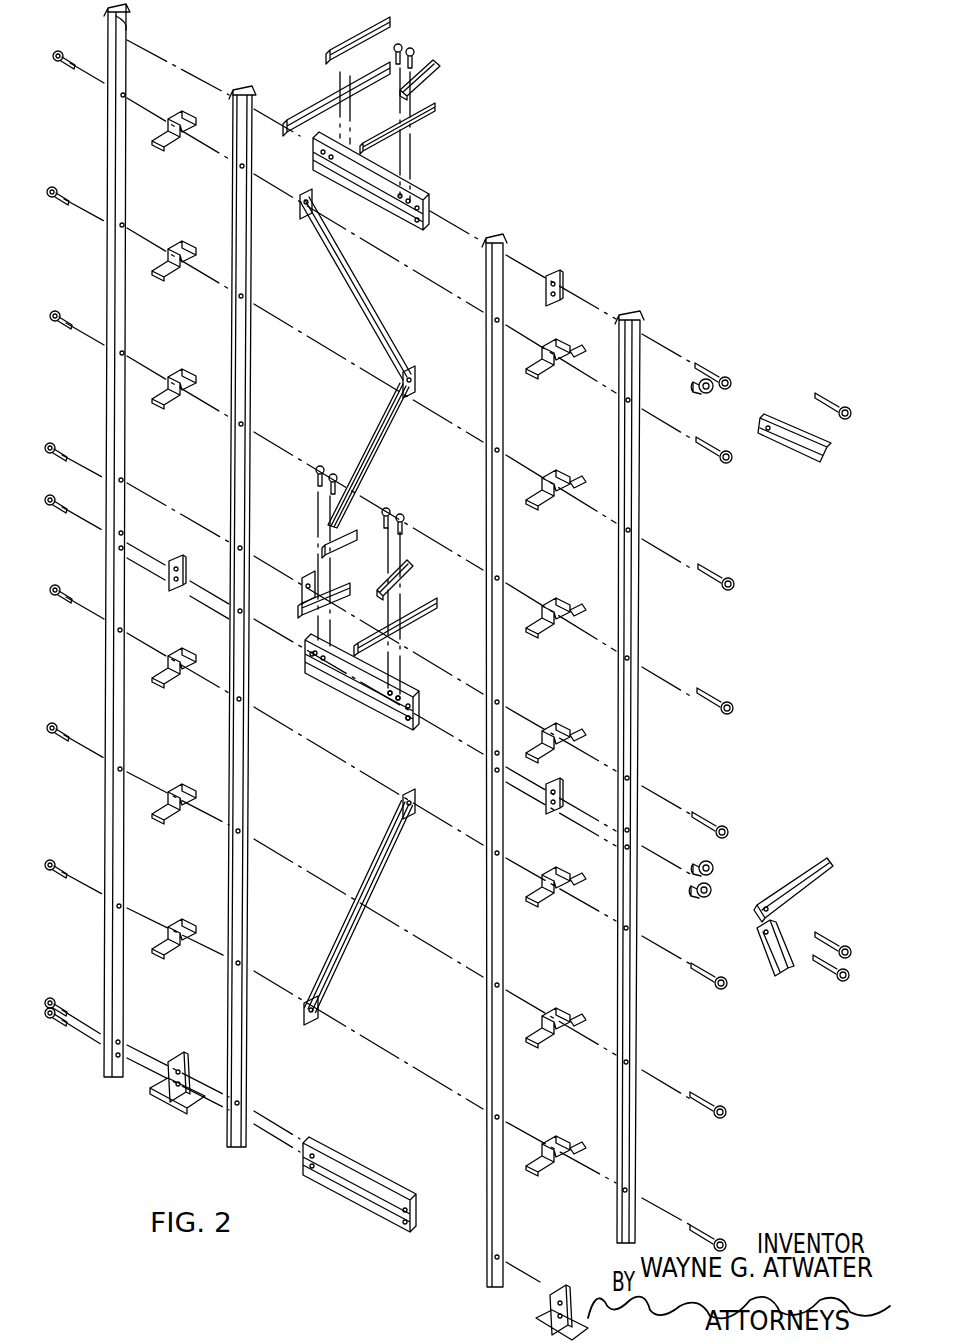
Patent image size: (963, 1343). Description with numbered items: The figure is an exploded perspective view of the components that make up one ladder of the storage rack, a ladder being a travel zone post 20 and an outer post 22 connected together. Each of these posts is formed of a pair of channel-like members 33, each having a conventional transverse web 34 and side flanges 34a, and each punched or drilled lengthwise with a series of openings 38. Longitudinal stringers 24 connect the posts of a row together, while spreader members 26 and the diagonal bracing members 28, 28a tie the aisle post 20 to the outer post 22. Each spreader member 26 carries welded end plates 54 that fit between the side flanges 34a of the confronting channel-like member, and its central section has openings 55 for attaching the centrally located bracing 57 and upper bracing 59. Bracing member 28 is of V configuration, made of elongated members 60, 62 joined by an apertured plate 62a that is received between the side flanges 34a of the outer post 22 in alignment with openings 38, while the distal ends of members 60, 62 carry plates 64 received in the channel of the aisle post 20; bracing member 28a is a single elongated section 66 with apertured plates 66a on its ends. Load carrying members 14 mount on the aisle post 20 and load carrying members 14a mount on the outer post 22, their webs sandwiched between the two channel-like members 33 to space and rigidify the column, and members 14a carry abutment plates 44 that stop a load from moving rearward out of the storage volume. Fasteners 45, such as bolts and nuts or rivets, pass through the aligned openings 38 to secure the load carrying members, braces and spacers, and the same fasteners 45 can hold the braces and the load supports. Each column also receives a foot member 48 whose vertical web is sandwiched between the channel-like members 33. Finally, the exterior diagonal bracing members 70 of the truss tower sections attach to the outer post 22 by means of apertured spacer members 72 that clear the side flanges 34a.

The load carrying member 14 is at (176, 148).
The load carrying member 14a is at (536, 370).
The travel zone post 20 is at (100, 266).
The outer post 22 is at (644, 492).
The longitudinal stringer 24 is at (312, 106).
The spreader member 26 is at (432, 202).
The bracing member 28 is at (394, 334).
The bracing member 28a is at (340, 920).
The channel-like member 33 is at (240, 386).
The transverse web 34 is at (116, 30).
The side flange 34a is at (654, 326).
The opening 38 is at (126, 96).
The abutment plate 44 is at (550, 375).
The fastener 45 is at (58, 62).
The foot member 48 is at (168, 1114).
The end plate 54 is at (306, 660).
The opening 55 is at (394, 692).
The centrally located bracing 57 is at (380, 588).
The upper bracing 59 is at (385, 42).
The elongated member 60 is at (345, 270).
The elongated member 62 is at (372, 470).
The apertured plate 62a is at (416, 378).
The plate 64 is at (314, 204).
The elongated section 66 is at (372, 880).
The apertured plate 66a is at (310, 1024).
The diagonal bracing member 70 is at (804, 456).
The apertured spacer member 72 is at (696, 388).